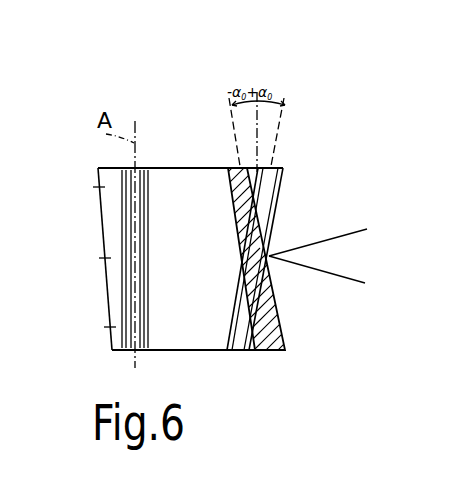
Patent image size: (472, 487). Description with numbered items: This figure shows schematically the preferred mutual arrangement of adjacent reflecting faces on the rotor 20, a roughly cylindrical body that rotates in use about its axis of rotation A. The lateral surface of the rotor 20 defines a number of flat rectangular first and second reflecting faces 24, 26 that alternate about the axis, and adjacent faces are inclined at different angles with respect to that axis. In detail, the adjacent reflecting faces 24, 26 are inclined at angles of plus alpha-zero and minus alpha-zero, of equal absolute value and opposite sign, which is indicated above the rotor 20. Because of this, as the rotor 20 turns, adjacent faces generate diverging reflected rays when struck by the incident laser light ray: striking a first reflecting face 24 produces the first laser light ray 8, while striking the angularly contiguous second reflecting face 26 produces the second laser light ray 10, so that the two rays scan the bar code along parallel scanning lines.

The rotor 20 is at (173, 122).
The first reflecting face 24 is at (284, 176).
The second reflecting face 26 is at (275, 352).
The second laser light ray 10 is at (347, 233).
The first laser light ray 8 is at (343, 280).